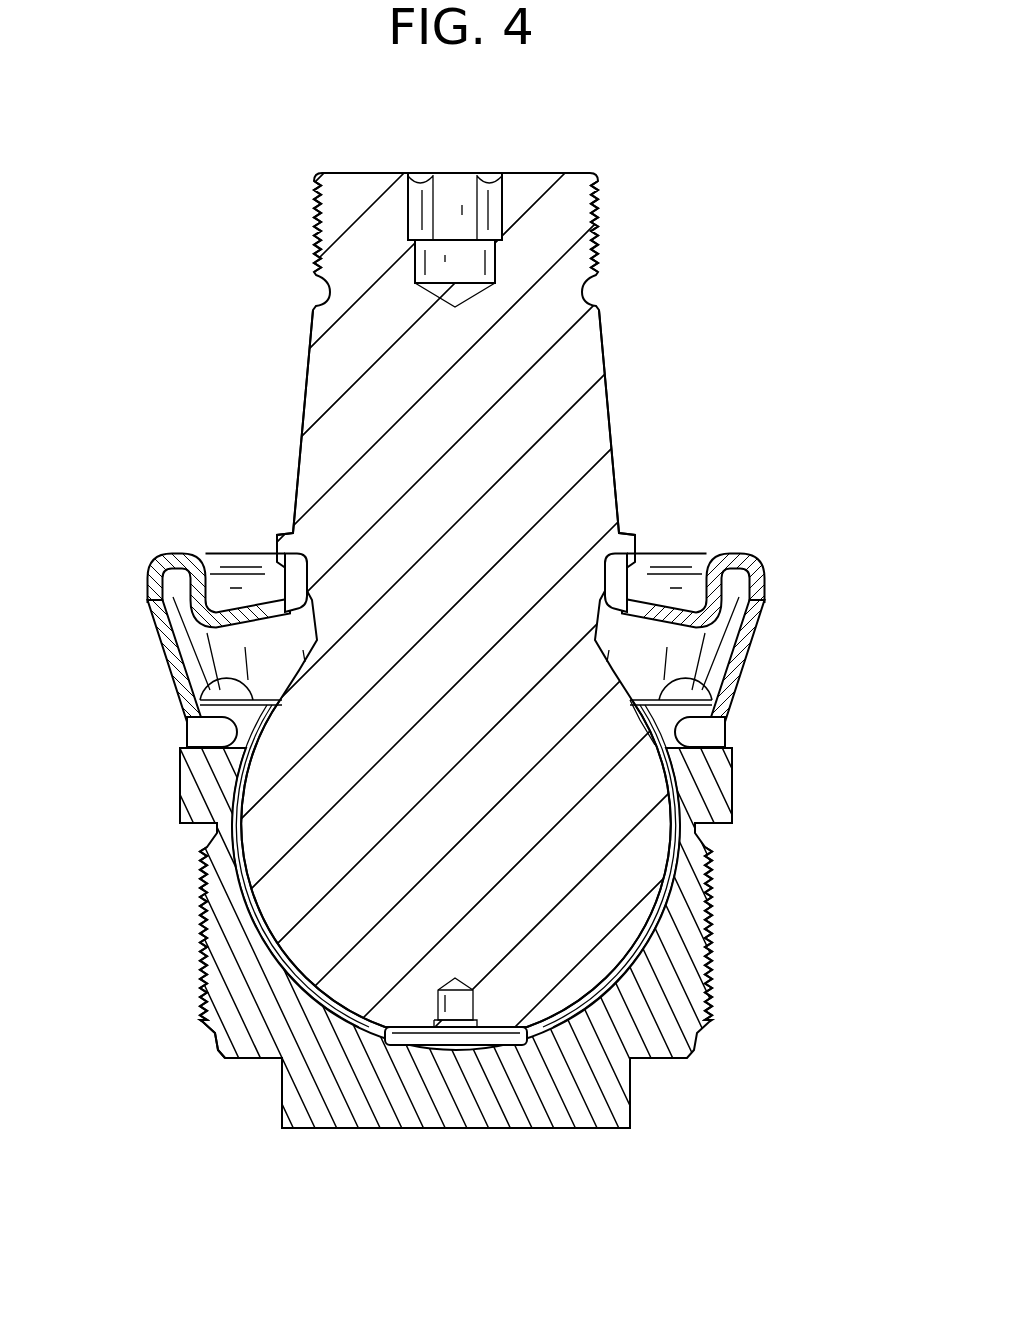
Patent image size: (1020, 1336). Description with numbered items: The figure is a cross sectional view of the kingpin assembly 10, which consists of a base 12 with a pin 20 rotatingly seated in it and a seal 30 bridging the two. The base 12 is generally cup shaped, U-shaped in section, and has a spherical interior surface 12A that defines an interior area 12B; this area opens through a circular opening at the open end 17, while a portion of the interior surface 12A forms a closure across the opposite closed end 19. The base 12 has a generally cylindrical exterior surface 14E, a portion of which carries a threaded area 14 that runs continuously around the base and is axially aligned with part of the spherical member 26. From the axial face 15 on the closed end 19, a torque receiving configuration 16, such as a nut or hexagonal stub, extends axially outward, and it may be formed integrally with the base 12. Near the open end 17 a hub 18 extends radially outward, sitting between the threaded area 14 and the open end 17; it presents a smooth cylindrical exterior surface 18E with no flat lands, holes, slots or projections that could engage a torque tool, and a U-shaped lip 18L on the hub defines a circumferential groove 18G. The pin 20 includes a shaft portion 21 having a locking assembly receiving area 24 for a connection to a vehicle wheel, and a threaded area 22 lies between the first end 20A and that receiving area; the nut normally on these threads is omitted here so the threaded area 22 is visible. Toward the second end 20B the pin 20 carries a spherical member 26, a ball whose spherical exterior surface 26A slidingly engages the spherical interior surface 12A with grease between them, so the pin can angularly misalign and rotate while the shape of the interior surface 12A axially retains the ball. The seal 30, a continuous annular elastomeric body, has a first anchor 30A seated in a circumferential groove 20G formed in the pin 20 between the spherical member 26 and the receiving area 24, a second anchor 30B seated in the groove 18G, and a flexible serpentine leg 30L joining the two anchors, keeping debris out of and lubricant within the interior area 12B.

The kingpin assembly 10 is at (782, 203).
The base 12 is at (821, 1128).
The spherical interior surface 12A is at (322, 988).
The interior area 12B is at (218, 680).
The threaded area 14 is at (722, 850).
The exterior surface 14E is at (197, 992).
The axial face 15 is at (245, 1062).
The torque receiving configuration 16 is at (652, 1100).
The open end 17 is at (657, 707).
The hub 18 is at (738, 762).
The smooth cylindrical exterior surface 18E is at (180, 812).
The groove 18G is at (732, 792).
The lip 18L is at (715, 722).
The closed end 19 is at (405, 1080).
The pin 20 is at (292, 372).
The first end 20A is at (560, 172).
The second end 20B is at (480, 1035).
The circumferential groove 20G is at (290, 545).
The shaft portion 21 is at (275, 178).
The threaded area 22 is at (606, 180).
The locking assembly receiving area 24 is at (645, 313).
The spherical member 26 is at (315, 832).
The spherical exterior surface 26A is at (237, 930).
The seal 30 is at (481, 628).
The first anchor 30A is at (648, 553).
The second anchor 30B is at (205, 737).
The flexible serpentine leg 30L is at (150, 582).